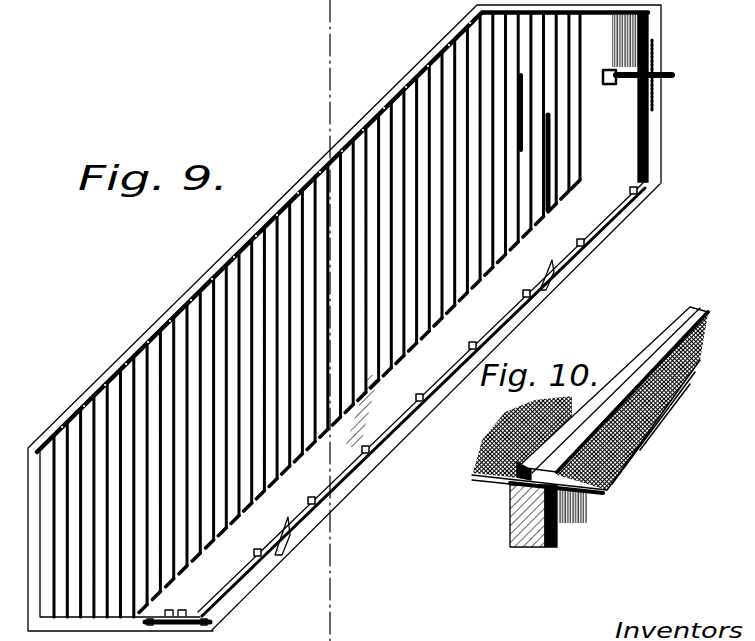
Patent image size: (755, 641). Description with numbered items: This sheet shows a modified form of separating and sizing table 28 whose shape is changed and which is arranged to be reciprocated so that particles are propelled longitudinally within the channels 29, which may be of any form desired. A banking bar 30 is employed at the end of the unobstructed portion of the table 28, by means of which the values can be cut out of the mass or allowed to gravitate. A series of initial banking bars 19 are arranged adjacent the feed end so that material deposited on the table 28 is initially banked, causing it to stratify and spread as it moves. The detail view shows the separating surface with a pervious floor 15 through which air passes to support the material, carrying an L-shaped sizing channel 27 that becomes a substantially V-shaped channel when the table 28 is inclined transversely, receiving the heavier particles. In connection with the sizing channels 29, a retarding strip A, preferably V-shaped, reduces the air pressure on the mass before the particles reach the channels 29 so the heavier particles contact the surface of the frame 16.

In FIG. 9, the frame 16 is at (344, 315).
In FIG. 9, the bars 28 is at (346, 315).
In FIG. 9, the rivets 29 is at (195, 300).
In FIG. 9, the bolts 30 is at (417, 408).
In FIG. 9, the pin 19 is at (609, 84).
In FIG. 10, the bar 27 is at (643, 340).
In FIG. 10, the base plate 15 is at (503, 433).
In FIG. 10, the support block A is at (592, 503).